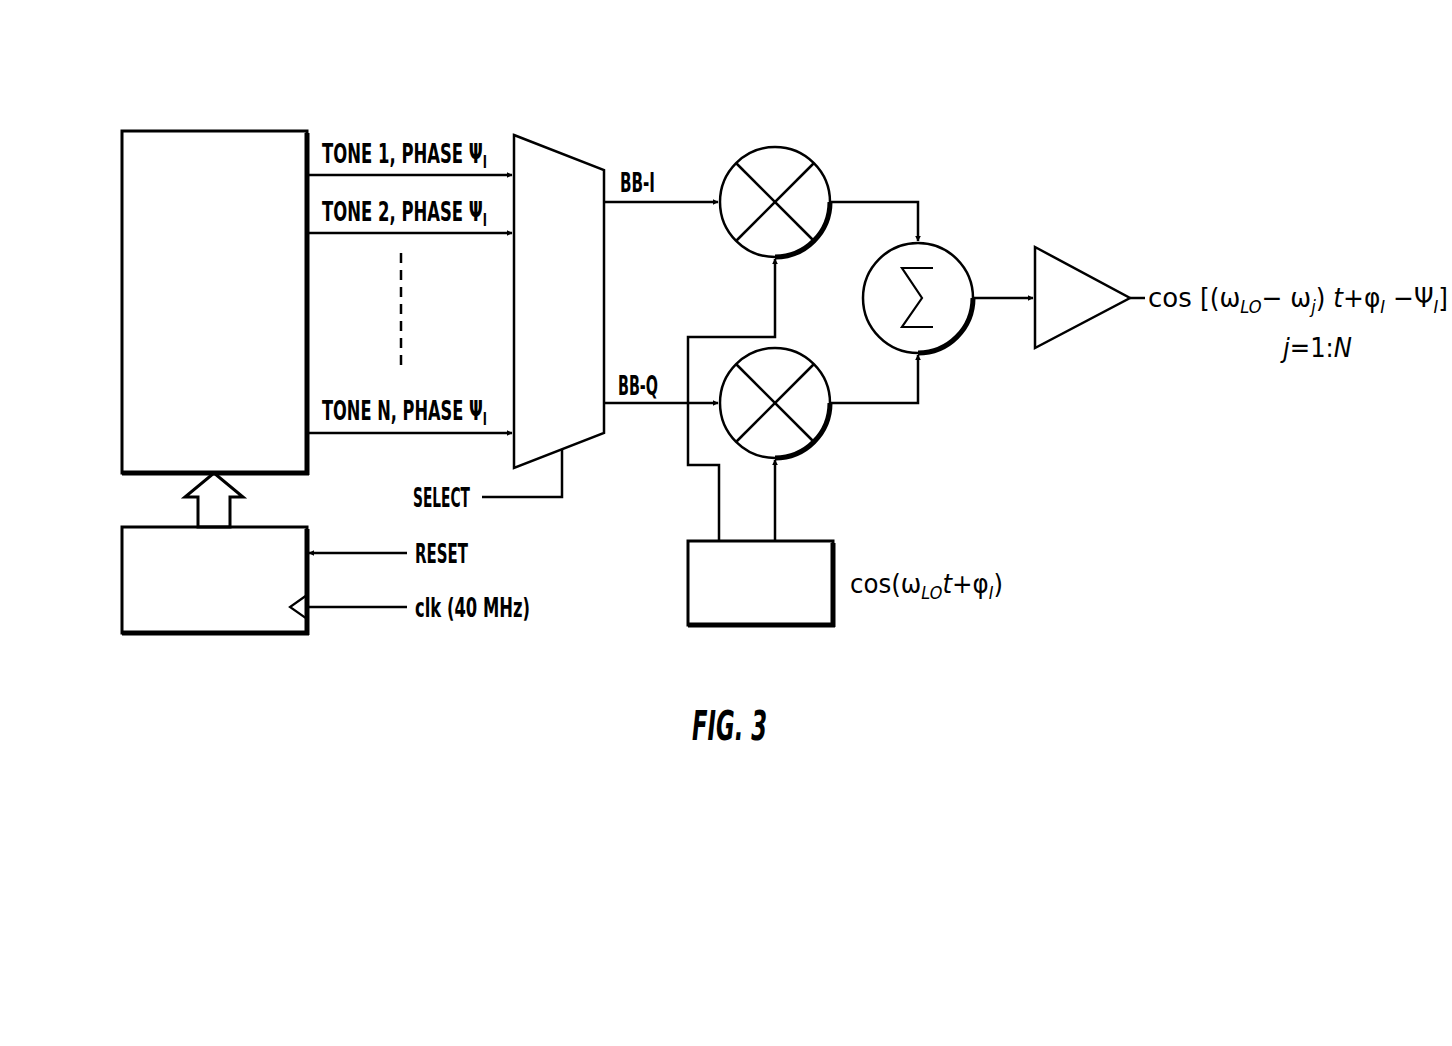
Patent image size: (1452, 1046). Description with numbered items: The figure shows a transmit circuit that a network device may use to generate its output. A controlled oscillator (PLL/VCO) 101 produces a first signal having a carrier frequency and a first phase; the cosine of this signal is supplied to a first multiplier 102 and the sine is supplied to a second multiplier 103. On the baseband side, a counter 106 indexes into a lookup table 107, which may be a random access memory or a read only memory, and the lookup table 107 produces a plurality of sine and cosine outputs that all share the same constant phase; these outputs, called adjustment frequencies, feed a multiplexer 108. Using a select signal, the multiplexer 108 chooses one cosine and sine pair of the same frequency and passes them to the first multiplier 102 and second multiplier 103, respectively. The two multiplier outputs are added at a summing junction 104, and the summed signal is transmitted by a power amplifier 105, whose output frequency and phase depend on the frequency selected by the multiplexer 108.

The controlled oscillator (PLL/VCO) 101 is at (688, 595).
The first multiplier 102 is at (757, 152).
The second multiplier 103 is at (828, 421).
The summing junction 104 is at (953, 346).
The power amplifier 105 is at (1085, 270).
The counter 106 is at (204, 628).
The lookup table 107 is at (230, 131).
The multiplexer 108 is at (560, 153).